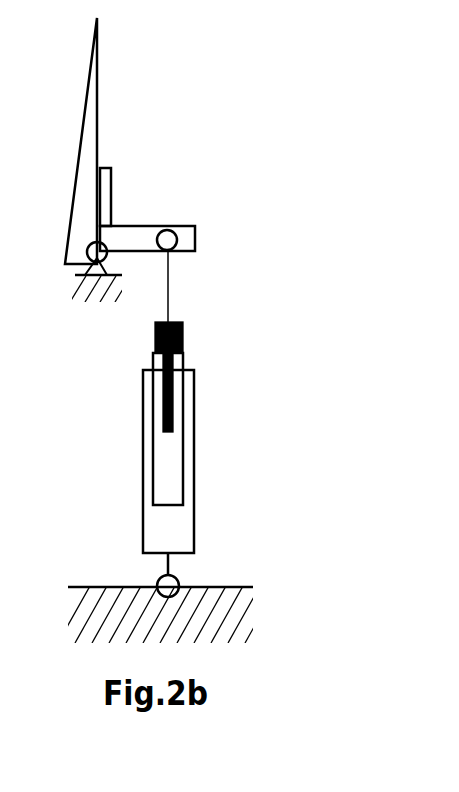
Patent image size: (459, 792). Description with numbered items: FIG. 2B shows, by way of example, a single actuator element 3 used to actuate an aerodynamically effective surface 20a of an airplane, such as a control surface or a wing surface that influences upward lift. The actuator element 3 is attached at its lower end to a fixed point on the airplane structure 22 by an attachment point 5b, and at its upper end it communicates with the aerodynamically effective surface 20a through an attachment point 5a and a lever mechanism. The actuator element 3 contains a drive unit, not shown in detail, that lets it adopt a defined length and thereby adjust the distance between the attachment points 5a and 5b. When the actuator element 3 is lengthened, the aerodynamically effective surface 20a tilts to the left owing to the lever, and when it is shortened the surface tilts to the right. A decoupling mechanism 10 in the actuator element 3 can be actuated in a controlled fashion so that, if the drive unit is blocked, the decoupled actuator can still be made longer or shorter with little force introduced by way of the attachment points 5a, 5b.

The aerodynamically effective surface 20a is at (98, 82).
The attachment point 5a is at (178, 240).
The decoupling mechanism 10 is at (183, 335).
The actuator element 3 is at (180, 527).
The attachment point 5b is at (160, 576).
The airplane structure 22 is at (245, 622).